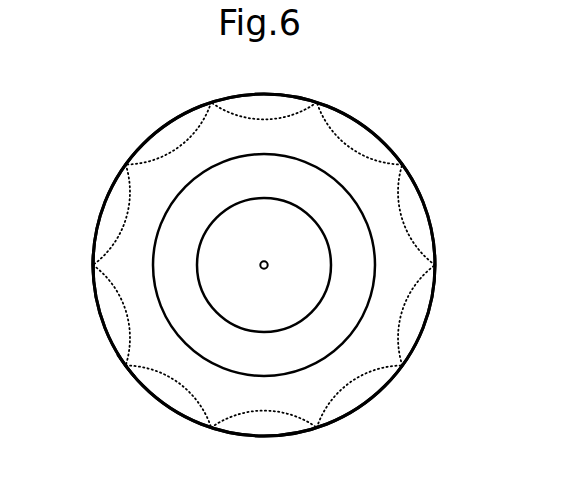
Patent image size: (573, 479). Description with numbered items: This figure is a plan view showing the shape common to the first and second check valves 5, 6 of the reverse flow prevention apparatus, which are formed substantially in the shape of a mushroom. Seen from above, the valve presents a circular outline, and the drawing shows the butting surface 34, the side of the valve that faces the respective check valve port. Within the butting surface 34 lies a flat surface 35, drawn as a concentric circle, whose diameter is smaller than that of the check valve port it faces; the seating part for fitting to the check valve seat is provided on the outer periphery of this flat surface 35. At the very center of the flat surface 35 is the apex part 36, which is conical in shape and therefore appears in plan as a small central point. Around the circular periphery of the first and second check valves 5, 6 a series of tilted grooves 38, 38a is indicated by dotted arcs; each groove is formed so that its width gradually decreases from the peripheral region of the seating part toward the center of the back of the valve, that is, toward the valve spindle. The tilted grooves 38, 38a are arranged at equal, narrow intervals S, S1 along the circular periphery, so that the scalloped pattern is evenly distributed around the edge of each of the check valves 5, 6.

The first check valve 5 is at (402, 140).
The second check valve 6 is at (509, 108).
The butting surface 34 is at (368, 195).
The flat surface 35 is at (350, 255).
The apex part 36 is at (295, 297).
The tilted groove 38 is at (403, 310).
The tilted groove 38a is at (360, 383).
The interval S is at (125, 365).
The interval S1 is at (92, 265).